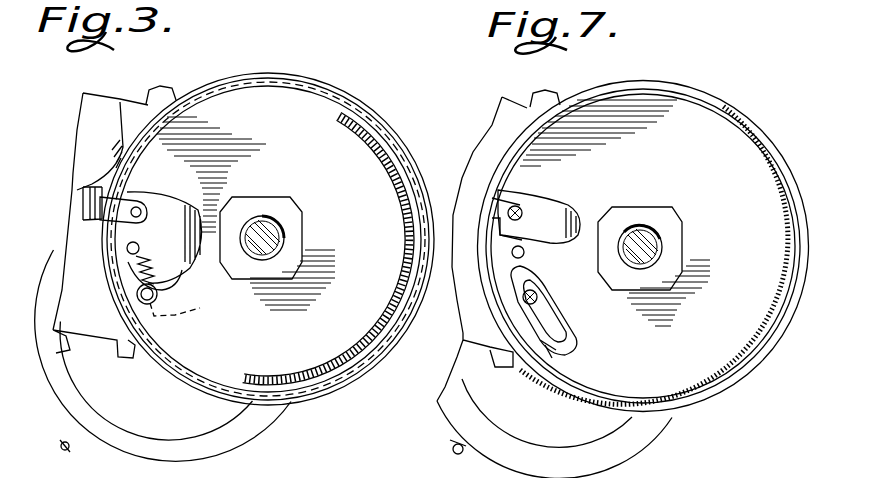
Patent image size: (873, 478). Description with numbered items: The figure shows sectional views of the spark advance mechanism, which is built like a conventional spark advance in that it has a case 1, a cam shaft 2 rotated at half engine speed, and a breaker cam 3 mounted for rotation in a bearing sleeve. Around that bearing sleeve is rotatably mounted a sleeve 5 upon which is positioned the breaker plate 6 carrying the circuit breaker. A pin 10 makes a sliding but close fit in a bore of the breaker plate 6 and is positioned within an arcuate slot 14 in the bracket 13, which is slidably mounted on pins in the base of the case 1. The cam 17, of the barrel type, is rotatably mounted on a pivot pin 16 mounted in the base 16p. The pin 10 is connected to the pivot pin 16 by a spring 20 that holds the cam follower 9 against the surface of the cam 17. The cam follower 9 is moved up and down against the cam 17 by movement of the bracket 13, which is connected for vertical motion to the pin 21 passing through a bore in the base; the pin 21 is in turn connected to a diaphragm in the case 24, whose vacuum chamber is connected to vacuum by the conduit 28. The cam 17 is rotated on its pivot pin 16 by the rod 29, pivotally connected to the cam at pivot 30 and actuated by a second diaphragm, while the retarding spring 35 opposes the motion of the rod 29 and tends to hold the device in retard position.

In FIG. 3, the case 1 is at (287, 71).
In FIG. 7, the case 1 is at (688, 83).
In FIG. 3, the cam shaft 2 is at (284, 238).
In FIG. 7, the cam shaft 2 is at (662, 247).
In FIG. 3, the breaker cam 3 is at (292, 207).
In FIG. 7, the breaker cam 3 is at (678, 208).
In FIG. 3, the sleeve 5 is at (230, 80).
In FIG. 7, the sleeve 5 is at (658, 232).
In FIG. 3, the breaker plate 6 is at (352, 101).
In FIG. 3, the cam follower 9 is at (160, 278).
In FIG. 3, the pin 10 is at (144, 304).
In FIG. 7, the pin 10 is at (542, 296).
In FIG. 7, the bracket 13 is at (566, 316).
In FIG. 7, the arcuate slot 14 is at (520, 316).
In FIG. 3, the pivot pin 16 is at (126, 249).
In FIG. 7, the pivot pin 16 is at (512, 250).
In FIG. 3, the base 16p is at (364, 131).
In FIG. 7, the base 16p is at (722, 115).
In FIG. 3, the cam 17 is at (160, 197).
In FIG. 7, the cam 17 is at (560, 206).
In FIG. 3, the spring 20 is at (130, 277).
In FIG. 7, the pin 21 is at (536, 368).
In FIG. 3, the case 24 is at (245, 440).
In FIG. 7, the case 24 is at (648, 428).
In FIG. 3, the conduit 28 is at (64, 450).
In FIG. 7, the conduit 28 is at (450, 448).
In FIG. 3, the rod 29 is at (108, 223).
In FIG. 7, the rod 29 is at (510, 201).
In FIG. 3, the pivot 30 is at (142, 216).
In FIG. 7, the pivot 30 is at (518, 204).
In FIG. 3, the retarding spring 35 is at (83, 192).